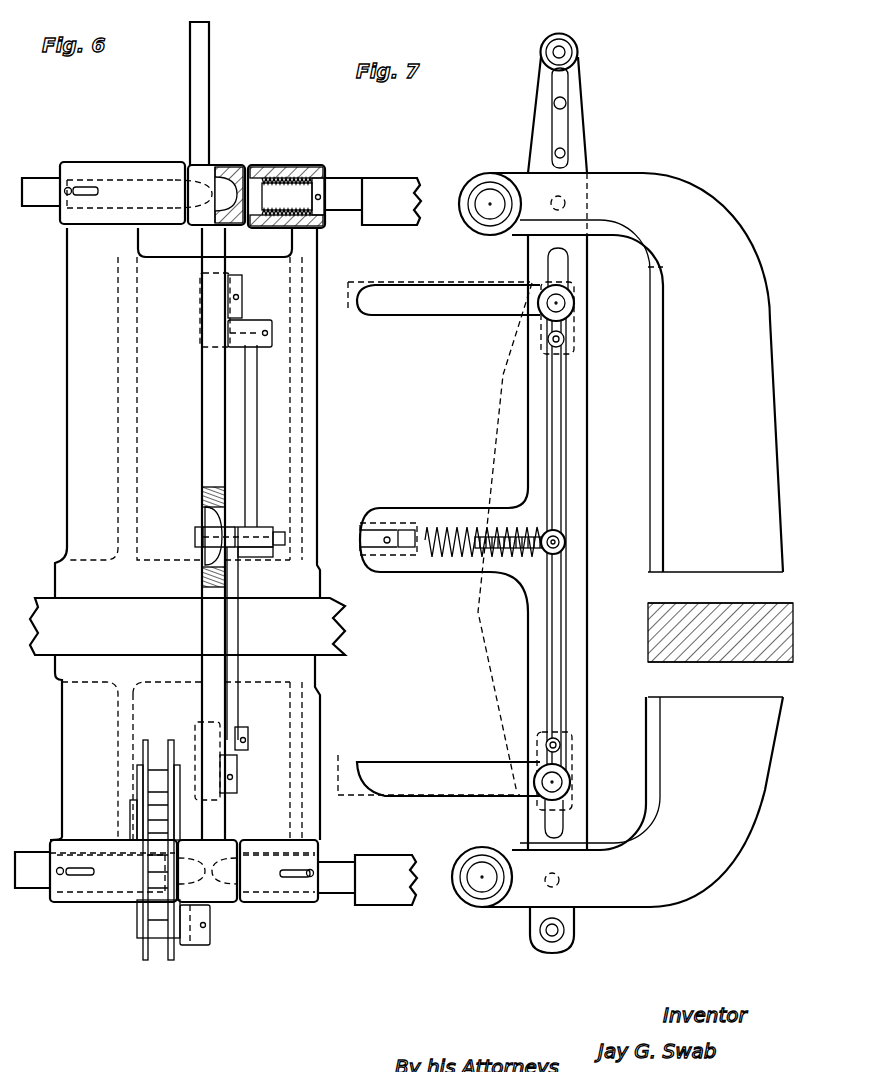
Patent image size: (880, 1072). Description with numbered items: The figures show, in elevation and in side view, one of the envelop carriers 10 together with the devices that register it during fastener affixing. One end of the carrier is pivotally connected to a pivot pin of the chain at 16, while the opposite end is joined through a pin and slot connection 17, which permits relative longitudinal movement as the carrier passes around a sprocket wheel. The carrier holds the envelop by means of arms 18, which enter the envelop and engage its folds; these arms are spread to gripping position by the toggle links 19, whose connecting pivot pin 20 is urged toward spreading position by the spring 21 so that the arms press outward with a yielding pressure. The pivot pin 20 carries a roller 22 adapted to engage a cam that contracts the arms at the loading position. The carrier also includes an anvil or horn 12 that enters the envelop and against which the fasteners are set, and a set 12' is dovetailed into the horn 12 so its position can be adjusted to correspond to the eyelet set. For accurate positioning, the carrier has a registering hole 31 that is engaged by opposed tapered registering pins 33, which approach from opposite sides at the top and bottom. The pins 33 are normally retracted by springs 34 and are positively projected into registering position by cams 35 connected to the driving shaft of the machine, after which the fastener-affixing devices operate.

In FIG. 7, the carrier 10 is at (574, 262).
In FIG. 7, the horn 12 is at (444, 546).
In FIG. 7, the set 12' is at (372, 534).
In FIG. 7, the pivot pin connection 16 is at (552, 930).
In FIG. 7, the pin and slot connection 17 is at (560, 82).
In FIG. 7, the arms 18 is at (443, 308).
In FIG. 6, the toggle links 19 is at (252, 466).
In FIG. 7, the toggle links 19 is at (553, 472).
In FIG. 6, the pivot pin 20 is at (250, 550).
In FIG. 7, the pivot pin 20 is at (567, 542).
In FIG. 7, the spring 21 is at (497, 533).
In FIG. 6, the roller 22 is at (268, 532).
In FIG. 6, the registering hole 31 is at (236, 190).
In FIG. 6, the tapered registering pins 33 is at (34, 184).
In FIG. 6, the springs 34 is at (285, 178).
In FIG. 6, the cams 35 is at (398, 188).